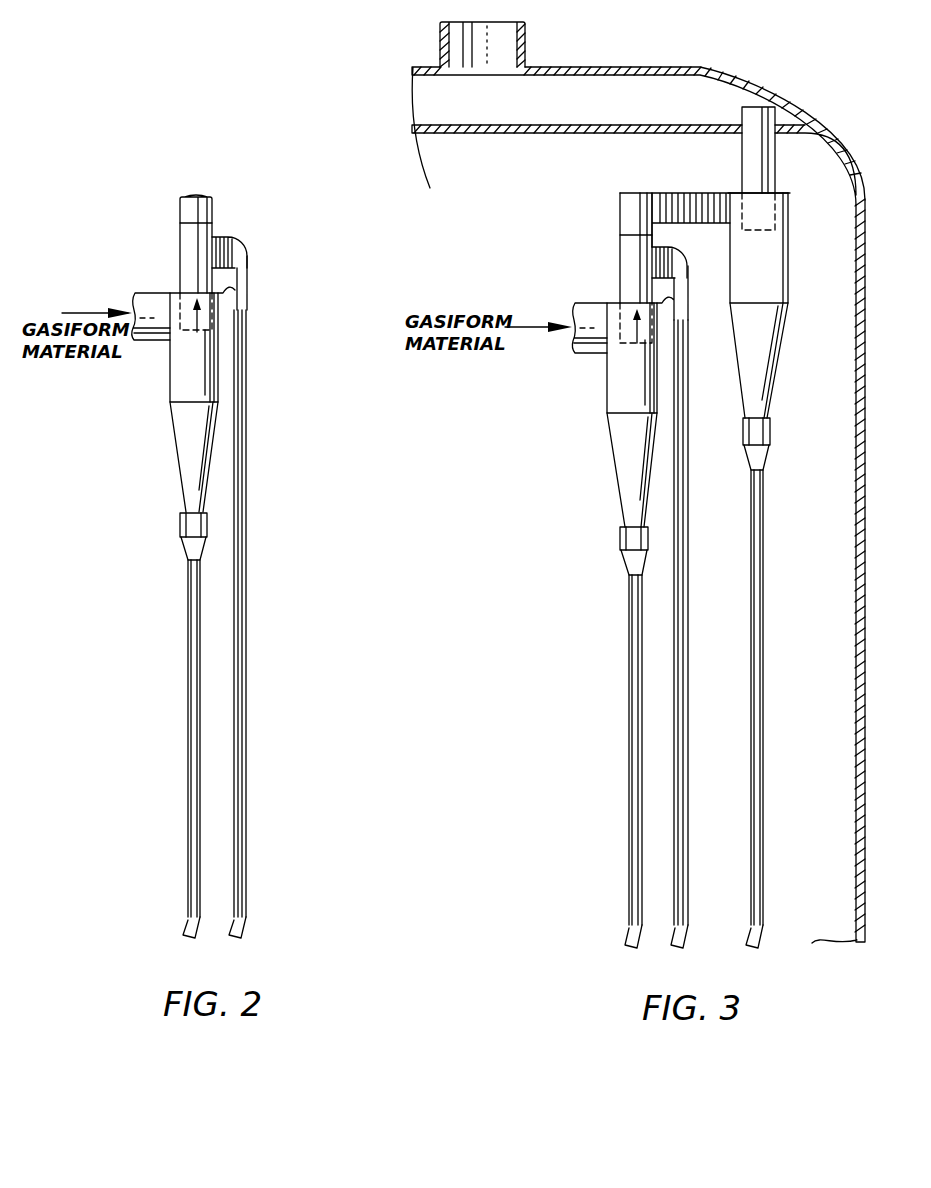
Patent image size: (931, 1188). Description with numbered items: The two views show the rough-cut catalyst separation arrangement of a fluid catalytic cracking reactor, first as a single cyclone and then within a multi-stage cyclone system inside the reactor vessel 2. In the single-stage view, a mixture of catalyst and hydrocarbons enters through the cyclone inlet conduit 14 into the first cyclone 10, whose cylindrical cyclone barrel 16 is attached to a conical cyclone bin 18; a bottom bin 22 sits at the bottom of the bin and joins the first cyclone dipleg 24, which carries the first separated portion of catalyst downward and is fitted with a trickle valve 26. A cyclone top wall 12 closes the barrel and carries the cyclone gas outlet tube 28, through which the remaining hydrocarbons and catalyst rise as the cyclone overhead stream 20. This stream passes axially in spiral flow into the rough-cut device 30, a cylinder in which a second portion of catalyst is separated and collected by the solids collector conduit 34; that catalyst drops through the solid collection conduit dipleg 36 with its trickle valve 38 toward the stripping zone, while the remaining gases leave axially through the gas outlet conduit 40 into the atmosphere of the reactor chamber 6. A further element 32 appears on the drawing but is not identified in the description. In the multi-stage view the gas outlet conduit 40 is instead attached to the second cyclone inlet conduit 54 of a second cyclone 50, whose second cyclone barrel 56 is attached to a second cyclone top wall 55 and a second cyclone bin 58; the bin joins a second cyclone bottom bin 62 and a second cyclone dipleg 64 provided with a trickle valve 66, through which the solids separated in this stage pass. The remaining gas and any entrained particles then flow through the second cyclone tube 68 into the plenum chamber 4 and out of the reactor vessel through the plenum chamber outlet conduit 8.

In FIG. 3, the reactor vessel 2 is at (606, 44).
In FIG. 3, the plenum chamber 4 is at (693, 75).
In FIG. 3, the reactor chamber 6 is at (841, 148).
In FIG. 3, the plenum chamber outlet conduit 8 is at (441, 34).
In FIG. 2, the first cyclone 10 is at (140, 375).
In FIG. 3, the first cyclone 10 is at (580, 371).
In FIG. 2, the cyclone top wall 12 is at (247, 294).
In FIG. 3, the cyclone top wall 12 is at (688, 301).
In FIG. 2, the cyclone inlet conduit 14 is at (136, 298).
In FIG. 3, the cyclone inlet conduit 14 is at (578, 304).
In FIG. 2, the cyclone barrel 16 is at (188, 390).
In FIG. 3, the cyclone barrel 16 is at (624, 401).
In FIG. 2, the cyclone bin 18 is at (188, 454).
In FIG. 3, the cyclone bin 18 is at (632, 471).
In FIG. 2, the cyclone overhead stream 20 is at (198, 358).
In FIG. 3, the cyclone overhead stream 20 is at (636, 323).
In FIG. 2, the bottom bin 22 is at (182, 525).
In FIG. 3, the bottom bin 22 is at (625, 539).
In FIG. 2, the first cyclone dipleg 24 is at (190, 651).
In FIG. 3, the first cyclone dipleg 24 is at (631, 653).
In FIG. 2, the trickle valve 26 is at (188, 926).
In FIG. 3, the trickle valve 26 is at (628, 929).
In FIG. 2, the cyclone gas outlet tube 28 is at (190, 289).
In FIG. 3, the cyclone gas outlet tube 28 is at (640, 298).
In FIG. 2, the rough-cut device 30 is at (146, 232).
In FIG. 3, the rough-cut device 30 is at (606, 240).
In FIG. 2, the outlet tube lower portion 32 is at (198, 240).
In FIG. 3, the outlet tube lower portion 32 is at (640, 263).
In FIG. 2, the solids collector conduit 34 is at (231, 259).
In FIG. 3, the solids collector conduit 34 is at (670, 268).
In FIG. 2, the solid collection conduit dipleg 36 is at (246, 527).
In FIG. 3, the solid collection conduit dipleg 36 is at (686, 549).
In FIG. 2, the trickle valve 38 is at (244, 927).
In FIG. 3, the trickle valve 38 is at (683, 932).
In FIG. 2, the gas outlet conduit 40 is at (213, 207).
In FIG. 3, the gas outlet conduit 40 is at (634, 211).
In FIG. 3, the second cyclone 50 is at (799, 243).
In FIG. 3, the second cyclone inlet conduit 54 is at (700, 206).
In FIG. 3, the second cyclone top wall 55 is at (781, 194).
In FIG. 3, the second cyclone barrel 56 is at (788, 293).
In FIG. 3, the second cyclone bin 58 is at (770, 349).
In FIG. 3, the second cyclone bottom bin 62 is at (771, 439).
In FIG. 3, the second cyclone dipleg 64 is at (764, 549).
In FIG. 3, the trickle valve 66 is at (760, 931).
In FIG. 3, the second cyclone tube 68 is at (758, 169).